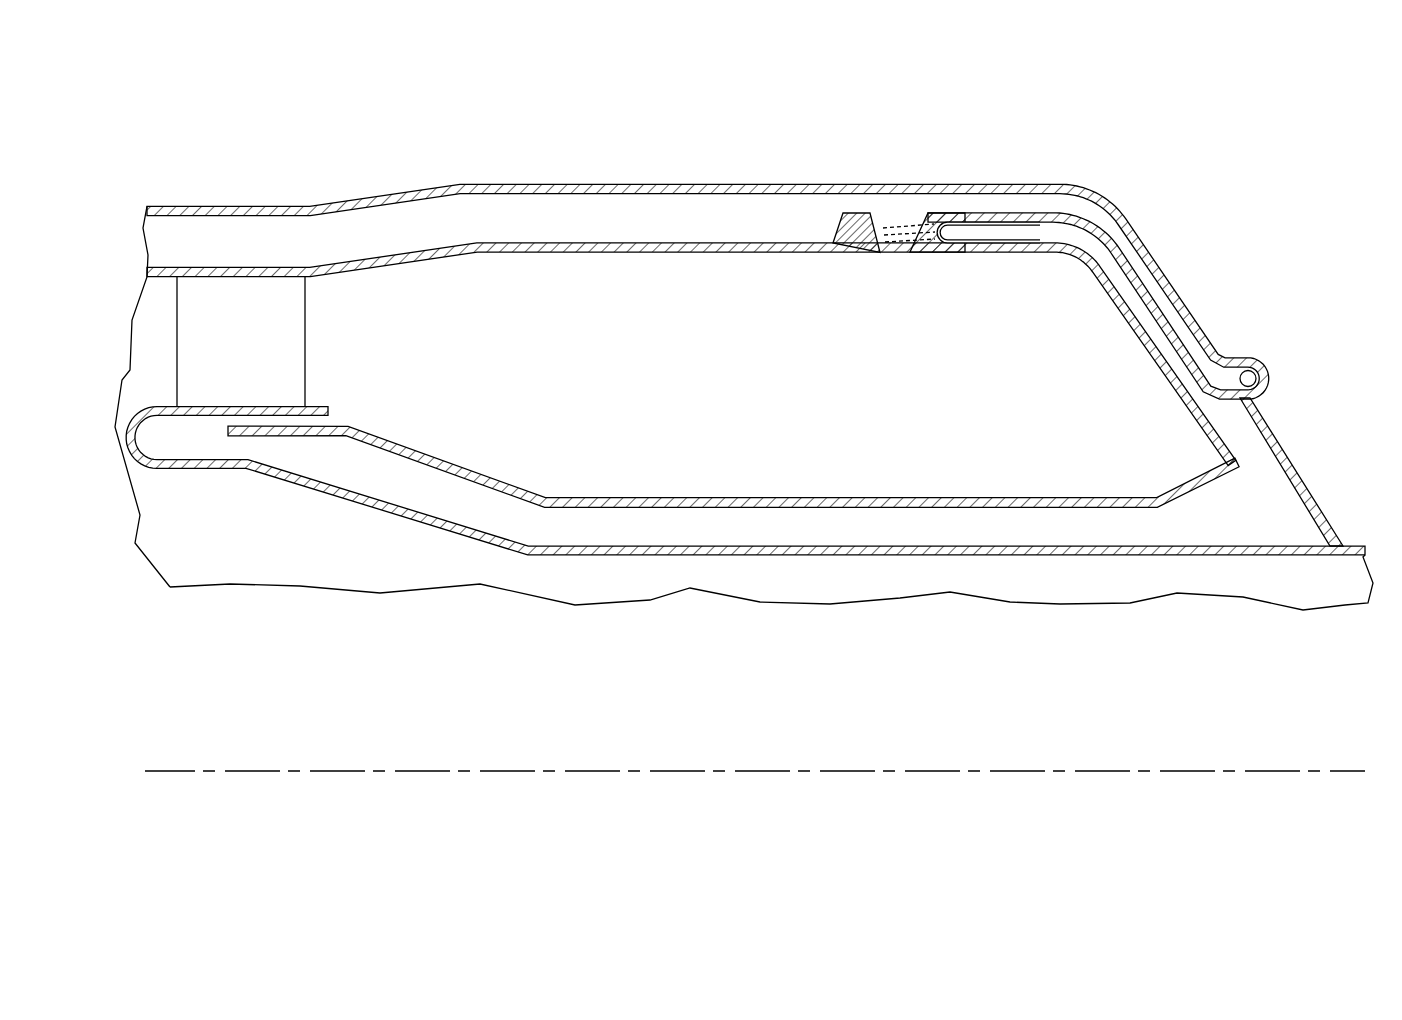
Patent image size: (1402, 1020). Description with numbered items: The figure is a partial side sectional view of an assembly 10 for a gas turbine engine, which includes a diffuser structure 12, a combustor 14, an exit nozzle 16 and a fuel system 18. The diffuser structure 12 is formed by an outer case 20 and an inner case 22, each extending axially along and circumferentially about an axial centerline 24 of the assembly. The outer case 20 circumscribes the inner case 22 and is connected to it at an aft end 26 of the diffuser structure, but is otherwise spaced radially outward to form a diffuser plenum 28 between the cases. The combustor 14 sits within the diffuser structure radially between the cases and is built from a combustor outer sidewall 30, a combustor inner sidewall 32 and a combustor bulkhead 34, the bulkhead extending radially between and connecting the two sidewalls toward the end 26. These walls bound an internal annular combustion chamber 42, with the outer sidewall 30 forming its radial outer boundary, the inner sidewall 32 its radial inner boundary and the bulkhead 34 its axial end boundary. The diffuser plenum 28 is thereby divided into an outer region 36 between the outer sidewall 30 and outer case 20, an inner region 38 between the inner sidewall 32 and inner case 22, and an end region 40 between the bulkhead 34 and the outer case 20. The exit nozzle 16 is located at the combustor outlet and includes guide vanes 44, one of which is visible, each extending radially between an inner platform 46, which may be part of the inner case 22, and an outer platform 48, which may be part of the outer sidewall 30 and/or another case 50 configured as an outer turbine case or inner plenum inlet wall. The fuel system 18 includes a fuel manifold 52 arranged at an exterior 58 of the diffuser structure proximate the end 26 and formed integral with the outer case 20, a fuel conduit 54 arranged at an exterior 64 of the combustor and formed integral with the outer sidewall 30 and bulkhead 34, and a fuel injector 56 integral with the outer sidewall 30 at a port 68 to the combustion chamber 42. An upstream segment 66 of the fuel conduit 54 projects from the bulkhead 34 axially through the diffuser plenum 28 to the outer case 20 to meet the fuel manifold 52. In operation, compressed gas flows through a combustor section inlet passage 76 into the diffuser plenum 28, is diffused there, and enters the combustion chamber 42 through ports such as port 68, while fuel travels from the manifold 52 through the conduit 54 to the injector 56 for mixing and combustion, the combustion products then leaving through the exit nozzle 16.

The assembly 10 is at (243, 155).
The diffuser structure 12 is at (600, 178).
The combustor 14 is at (670, 238).
The exit nozzle 16 is at (165, 321).
The fuel system 18 is at (1258, 352).
The outer case 20 is at (775, 185).
The inner case 22 is at (678, 558).
The axial centerline 24 is at (1358, 768).
The end of the diffuser structure 26 is at (1360, 545).
The diffuser plenum 28 is at (1247, 513).
The combustor outer sidewall 30 is at (572, 253).
The combustor inner sidewall 32 is at (632, 497).
The combustor bulkhead 34 is at (1195, 427).
The outer region 36 is at (722, 232).
The inner region 38 is at (722, 533).
The end region 40 is at (1230, 418).
The combustion chamber 42 is at (707, 391).
The guide vane 44 is at (177, 352).
The inner platform 46 is at (278, 405).
The outer platform 48 is at (258, 279).
The case 50 is at (170, 267).
The fuel manifold 52 is at (1270, 377).
The fuel conduit 54 is at (1147, 287).
The fuel injector 56 is at (922, 225).
The exterior of the diffuser structure 58 is at (1320, 498).
The exterior of the combustor 64 is at (1245, 451).
The upstream segment 66 is at (1197, 355).
The port 68 is at (897, 248).
The combustor section inlet passage 76 is at (165, 233).